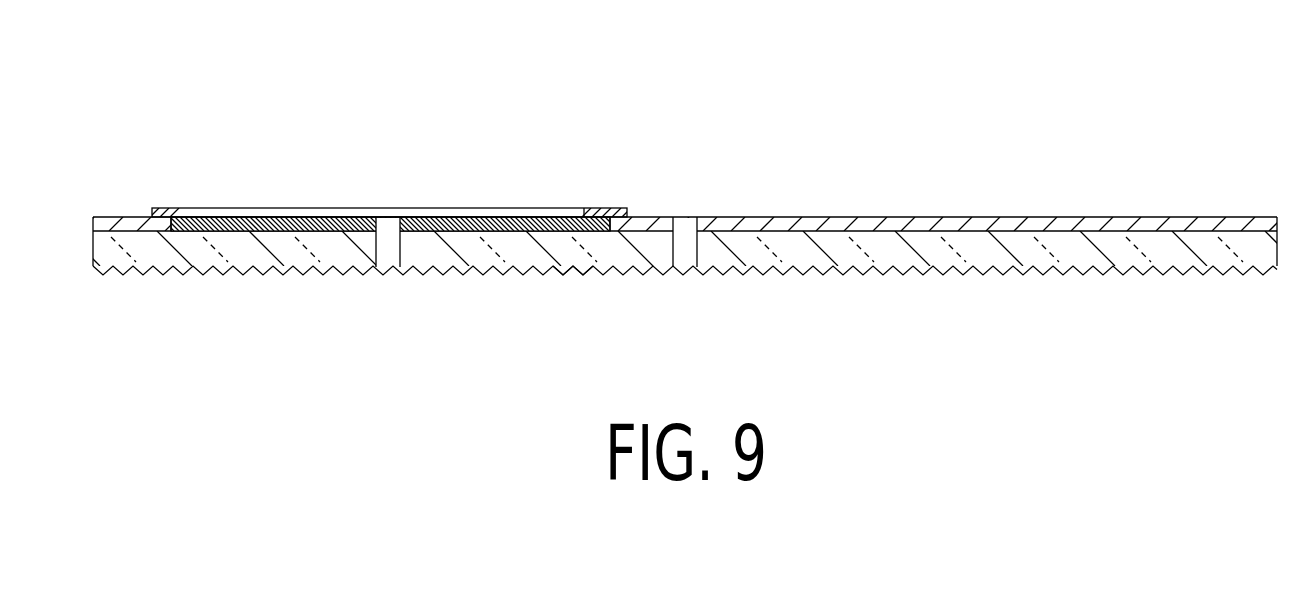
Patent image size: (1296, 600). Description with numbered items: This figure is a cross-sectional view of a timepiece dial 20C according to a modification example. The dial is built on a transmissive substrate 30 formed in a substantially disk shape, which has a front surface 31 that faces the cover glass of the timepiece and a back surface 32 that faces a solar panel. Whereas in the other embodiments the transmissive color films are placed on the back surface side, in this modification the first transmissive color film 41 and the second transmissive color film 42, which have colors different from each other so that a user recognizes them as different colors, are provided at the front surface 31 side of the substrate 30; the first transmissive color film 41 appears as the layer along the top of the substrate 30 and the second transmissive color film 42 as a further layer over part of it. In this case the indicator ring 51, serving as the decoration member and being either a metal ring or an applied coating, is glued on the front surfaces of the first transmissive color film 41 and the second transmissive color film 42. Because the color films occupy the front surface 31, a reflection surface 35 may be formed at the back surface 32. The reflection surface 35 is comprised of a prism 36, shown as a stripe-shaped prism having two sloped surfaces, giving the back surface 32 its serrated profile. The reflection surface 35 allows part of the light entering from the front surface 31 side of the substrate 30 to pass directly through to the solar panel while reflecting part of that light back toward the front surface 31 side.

The timepiece dial 20C is at (1180, 115).
The substrate 30 is at (1070, 242).
The front surface 31 is at (1244, 219).
The back surface 32 is at (1208, 269).
The reflection surface 35 is at (747, 268).
The prism 36 is at (562, 268).
The first transmissive color film 41 is at (941, 226).
The second transmissive color film 42 is at (504, 212).
The indicator ring 51 is at (598, 210).